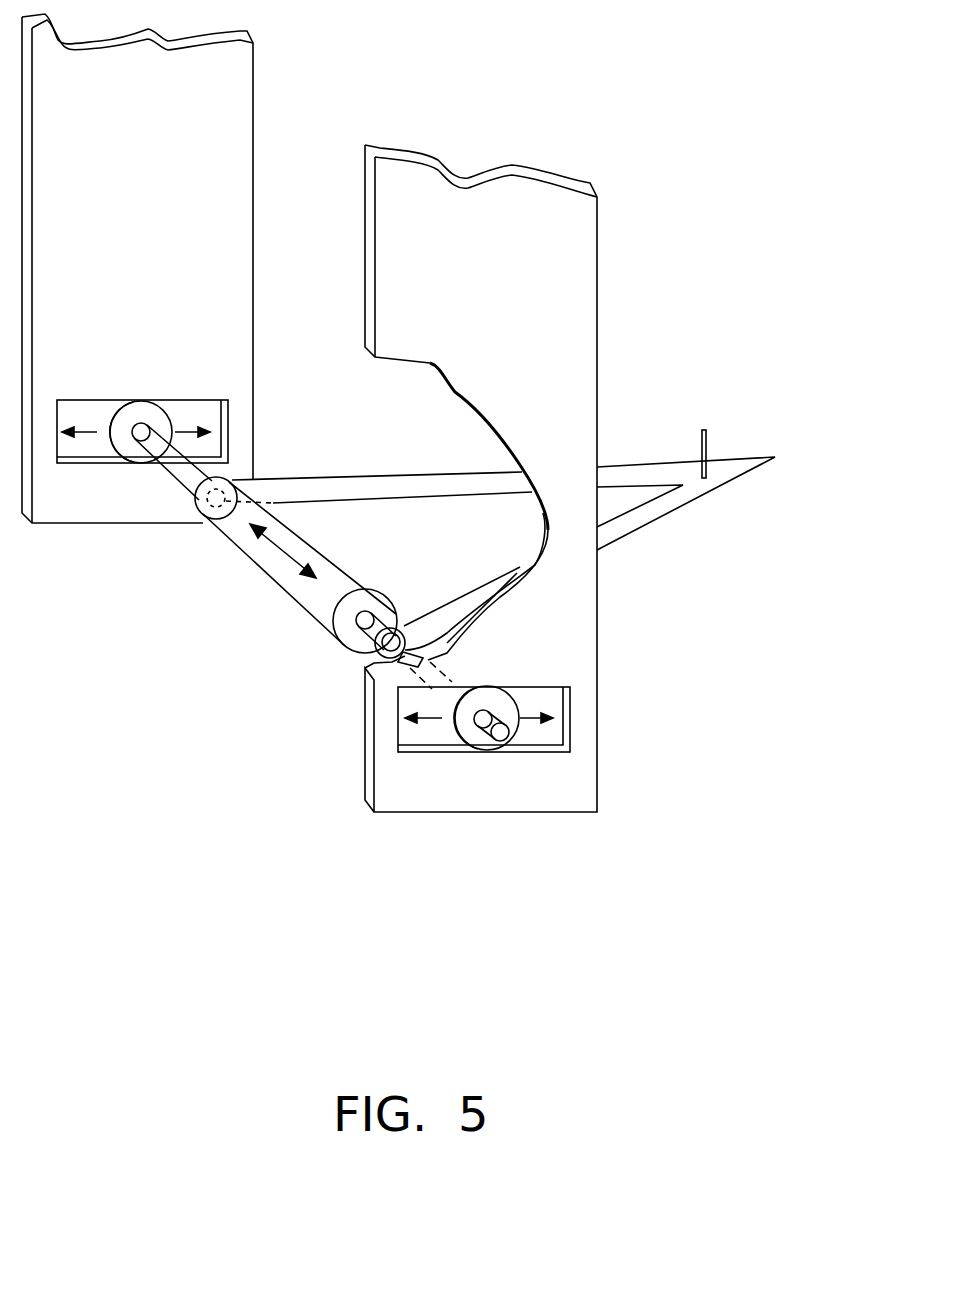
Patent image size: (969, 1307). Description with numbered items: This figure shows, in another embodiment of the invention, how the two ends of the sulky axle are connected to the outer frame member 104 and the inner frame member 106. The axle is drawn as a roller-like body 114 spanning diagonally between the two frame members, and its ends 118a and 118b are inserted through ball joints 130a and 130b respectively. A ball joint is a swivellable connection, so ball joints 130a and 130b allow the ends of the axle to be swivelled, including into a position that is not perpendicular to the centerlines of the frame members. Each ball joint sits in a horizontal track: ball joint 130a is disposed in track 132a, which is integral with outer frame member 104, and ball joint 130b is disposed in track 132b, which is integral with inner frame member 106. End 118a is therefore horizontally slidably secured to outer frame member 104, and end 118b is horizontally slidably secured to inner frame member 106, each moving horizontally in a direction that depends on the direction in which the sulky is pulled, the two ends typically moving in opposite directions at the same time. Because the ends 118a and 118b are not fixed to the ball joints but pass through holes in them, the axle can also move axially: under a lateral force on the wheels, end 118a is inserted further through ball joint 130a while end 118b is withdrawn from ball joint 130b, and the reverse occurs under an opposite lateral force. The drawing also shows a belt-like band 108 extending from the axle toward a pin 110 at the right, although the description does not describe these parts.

The outer frame member 104 is at (520, 298).
The inner frame member 106 is at (175, 182).
The belt 108 is at (640, 475).
The pin 110 is at (708, 437).
The roller 114 is at (303, 546).
The end of axle 118a is at (190, 472).
The end of axle 118b is at (498, 737).
The ball joint 130a is at (145, 405).
The ball joint 130b is at (463, 727).
The horizontal track 132a is at (190, 400).
The horizontal track 132b is at (540, 686).